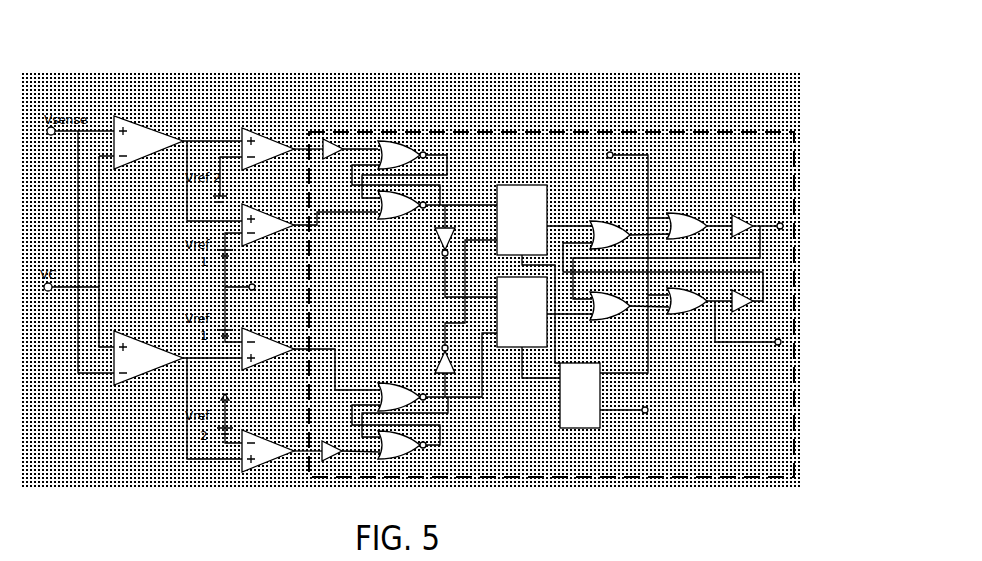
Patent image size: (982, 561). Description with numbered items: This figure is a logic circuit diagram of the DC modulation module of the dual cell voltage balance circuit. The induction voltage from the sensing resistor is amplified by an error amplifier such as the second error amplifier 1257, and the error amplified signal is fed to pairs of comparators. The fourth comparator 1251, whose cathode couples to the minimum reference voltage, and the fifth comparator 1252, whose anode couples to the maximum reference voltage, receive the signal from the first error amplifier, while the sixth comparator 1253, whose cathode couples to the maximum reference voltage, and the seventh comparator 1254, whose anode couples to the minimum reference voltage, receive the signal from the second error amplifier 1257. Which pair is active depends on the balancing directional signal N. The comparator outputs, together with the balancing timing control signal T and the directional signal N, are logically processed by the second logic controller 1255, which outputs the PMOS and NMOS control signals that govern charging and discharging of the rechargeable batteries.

The second error amplifier 1257 is at (131, 121).
The fourth comparator 1251 is at (258, 134).
The fifth comparator 1252 is at (258, 210).
The sixth comparator 1253 is at (258, 334).
The seventh comparator 1254 is at (258, 436).
The second logic controller 1255 is at (555, 132).